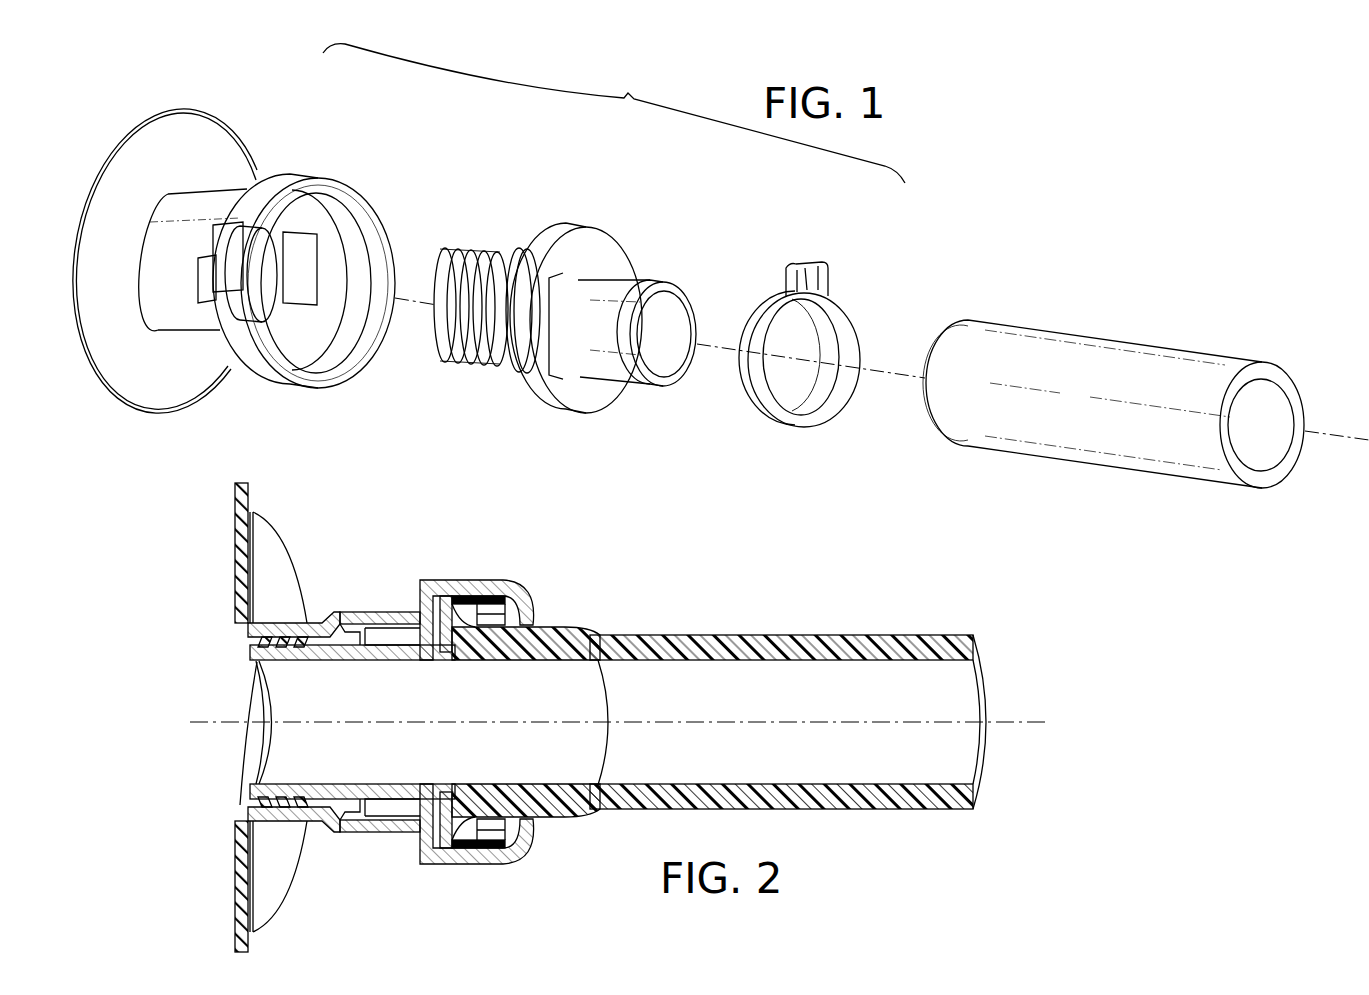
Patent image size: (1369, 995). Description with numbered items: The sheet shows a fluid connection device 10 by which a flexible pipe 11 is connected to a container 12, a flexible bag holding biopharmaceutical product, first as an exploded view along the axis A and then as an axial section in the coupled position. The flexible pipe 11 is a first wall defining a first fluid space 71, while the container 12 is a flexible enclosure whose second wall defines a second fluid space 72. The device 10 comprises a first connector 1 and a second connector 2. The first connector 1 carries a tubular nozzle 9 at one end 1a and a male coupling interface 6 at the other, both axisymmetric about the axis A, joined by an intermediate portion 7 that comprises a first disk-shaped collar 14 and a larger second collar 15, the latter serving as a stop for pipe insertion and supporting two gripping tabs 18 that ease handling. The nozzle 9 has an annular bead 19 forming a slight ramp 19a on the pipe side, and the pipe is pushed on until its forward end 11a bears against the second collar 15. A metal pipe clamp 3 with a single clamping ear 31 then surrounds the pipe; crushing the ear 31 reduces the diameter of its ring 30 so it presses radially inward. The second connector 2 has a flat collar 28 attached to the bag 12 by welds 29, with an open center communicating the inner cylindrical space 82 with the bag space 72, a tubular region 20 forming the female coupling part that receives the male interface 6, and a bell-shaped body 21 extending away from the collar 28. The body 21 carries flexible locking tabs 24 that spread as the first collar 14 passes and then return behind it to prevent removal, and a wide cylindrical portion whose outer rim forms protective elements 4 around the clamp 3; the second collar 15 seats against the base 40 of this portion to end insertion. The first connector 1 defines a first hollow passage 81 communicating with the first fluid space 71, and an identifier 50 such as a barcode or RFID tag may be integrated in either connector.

In FIG. 1, the first connector 1 is at (584, 284).
In FIG. 1, the end of first connector 1a is at (681, 373).
In FIG. 1, the second connector 2 is at (257, 243).
In FIG. 1, the pipe clamp 3 is at (819, 301).
In FIG. 2, the pipe clamp 3 is at (495, 826).
In FIG. 1, the protective elements 4 is at (392, 232).
In FIG. 2, the protective elements 4 is at (479, 575).
In FIG. 1, the coupling interface 6 is at (491, 235).
In FIG. 1, the intermediate portion 7 is at (550, 234).
In FIG. 1, the tubular nozzle 9 is at (585, 358).
In FIG. 2, the tubular nozzle 9 is at (495, 772).
In FIG. 1, the fluid connection device 10 is at (614, 113).
In FIG. 2, the fluid connection device 10 is at (394, 864).
In FIG. 1, the flexible pipe 11 is at (1111, 365).
In FIG. 2, the flexible pipe 11 is at (789, 624).
In FIG. 1, the forward end of the pipe 11a is at (950, 325).
In FIG. 2, the container 12 is at (238, 567).
In FIG. 1, the first disk-shaped collar 14 is at (522, 250).
In FIG. 1, the second collar 15 is at (612, 233).
In FIG. 2, the second collar 15 is at (448, 836).
In FIG. 1, the gripping tabs 18 is at (533, 343).
In FIG. 1, the annular bead 19 is at (627, 283).
In FIG. 1, the ramp 19a is at (652, 285).
In FIG. 1, the tubular region 20 is at (170, 210).
In FIG. 2, the tubular region 20 is at (315, 625).
In FIG. 2, the body 21 is at (394, 608).
In FIG. 1, the locking tabs 24 is at (202, 273).
In FIG. 1, the collar 28 is at (210, 137).
In FIG. 2, the collar 28 is at (285, 847).
In FIG. 2, the welds 29 is at (255, 872).
In FIG. 1, the ring 30 is at (846, 328).
In FIG. 1, the clamping ear 31 is at (785, 277).
In FIG. 2, the clamping ear 31 is at (498, 617).
In FIG. 1, the base of the wide cylindrical portion 40 is at (325, 218).
In FIG. 1, the identifier 50 is at (227, 282).
In FIG. 2, the first fluid space 71 is at (880, 697).
In FIG. 2, the second fluid space 72 is at (260, 736).
In FIG. 2, the first hollow passage 81 is at (570, 695).
In FIG. 2, the second hollow passage 82 is at (303, 692).
In FIG. 2, the axis A is at (1034, 722).